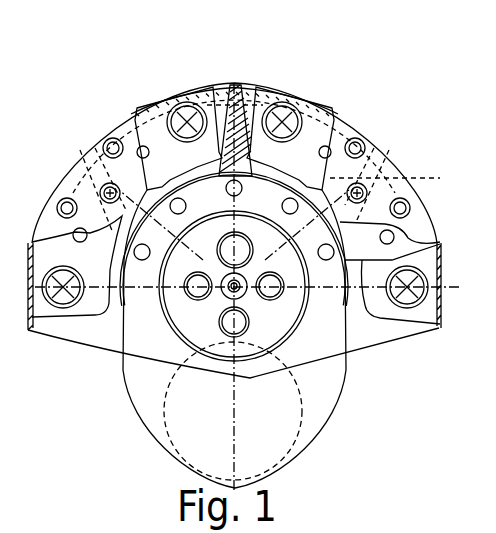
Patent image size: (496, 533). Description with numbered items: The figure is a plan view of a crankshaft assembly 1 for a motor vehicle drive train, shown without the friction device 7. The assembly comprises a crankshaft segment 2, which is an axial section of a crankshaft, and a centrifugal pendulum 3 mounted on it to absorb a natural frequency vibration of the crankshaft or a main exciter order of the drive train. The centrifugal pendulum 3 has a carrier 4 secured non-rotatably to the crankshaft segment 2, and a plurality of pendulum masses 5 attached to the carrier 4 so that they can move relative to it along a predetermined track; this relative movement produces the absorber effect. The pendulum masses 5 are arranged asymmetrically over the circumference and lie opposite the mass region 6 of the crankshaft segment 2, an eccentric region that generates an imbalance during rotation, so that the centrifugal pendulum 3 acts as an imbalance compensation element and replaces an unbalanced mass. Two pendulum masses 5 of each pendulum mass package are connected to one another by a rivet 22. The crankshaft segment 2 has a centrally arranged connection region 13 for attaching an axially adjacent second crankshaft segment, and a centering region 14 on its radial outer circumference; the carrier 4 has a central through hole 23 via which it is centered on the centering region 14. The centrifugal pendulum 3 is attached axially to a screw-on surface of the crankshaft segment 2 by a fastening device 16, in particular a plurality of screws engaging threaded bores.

The crankshaft assembly 1 is at (374, 118).
The crankshaft segment 2 is at (331, 387).
The centrifugal pendulum 3 is at (234, 286).
The carrier 4 is at (372, 330).
The pendulum mass 5 is at (138, 108).
The mass region 6 is at (258, 447).
The friction device 7 is at (235, 268).
The connection region 13 is at (441, 262).
The centering region 14 is at (315, 110).
The fastening device 16 is at (234, 180).
The rivet 22 is at (108, 183).
The central through hole 23 is at (298, 357).